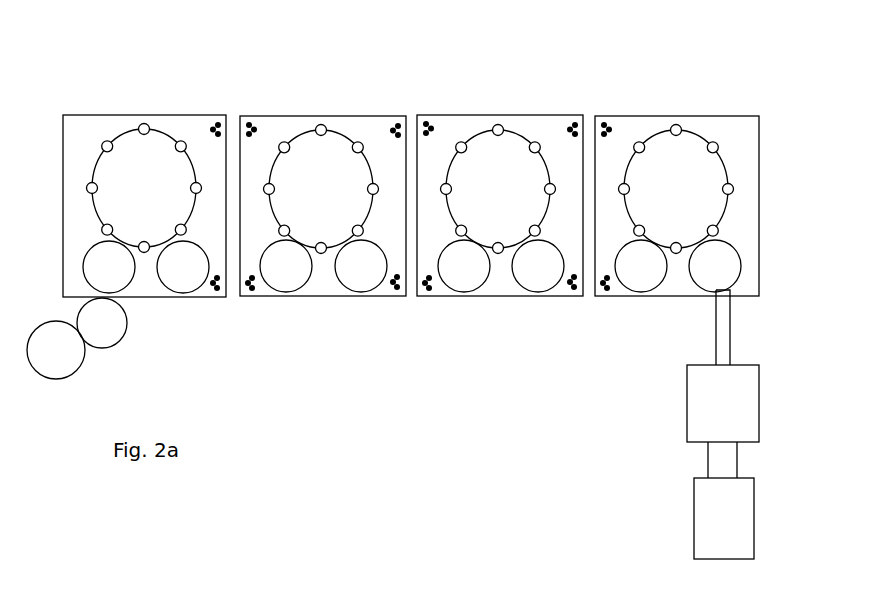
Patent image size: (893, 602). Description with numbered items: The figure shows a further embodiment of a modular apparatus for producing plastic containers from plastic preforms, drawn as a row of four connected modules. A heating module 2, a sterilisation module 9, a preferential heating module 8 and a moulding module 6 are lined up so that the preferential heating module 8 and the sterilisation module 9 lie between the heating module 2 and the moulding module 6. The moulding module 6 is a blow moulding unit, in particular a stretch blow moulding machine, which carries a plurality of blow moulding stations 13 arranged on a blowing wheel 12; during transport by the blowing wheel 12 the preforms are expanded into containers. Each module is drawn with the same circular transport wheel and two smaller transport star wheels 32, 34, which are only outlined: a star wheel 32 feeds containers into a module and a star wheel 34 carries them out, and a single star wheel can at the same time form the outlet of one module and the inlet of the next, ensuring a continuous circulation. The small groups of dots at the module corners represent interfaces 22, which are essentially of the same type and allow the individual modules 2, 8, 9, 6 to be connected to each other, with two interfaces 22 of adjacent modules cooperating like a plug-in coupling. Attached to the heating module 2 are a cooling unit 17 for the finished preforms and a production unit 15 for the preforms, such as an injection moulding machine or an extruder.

The heating module 2 is at (717, 102).
The moulding module 6 is at (122, 102).
The preferential heating module 8 is at (496, 102).
The sterilisation module 9 is at (316, 100).
The blowing wheel 12 is at (93, 177).
The blow moulding station 13 is at (149, 252).
The production unit 15 is at (724, 518).
The cooling unit 17 is at (723, 403).
The interface 22 is at (218, 292).
The transport star wheel 32 is at (528, 284).
The transport star wheel 34 is at (463, 284).